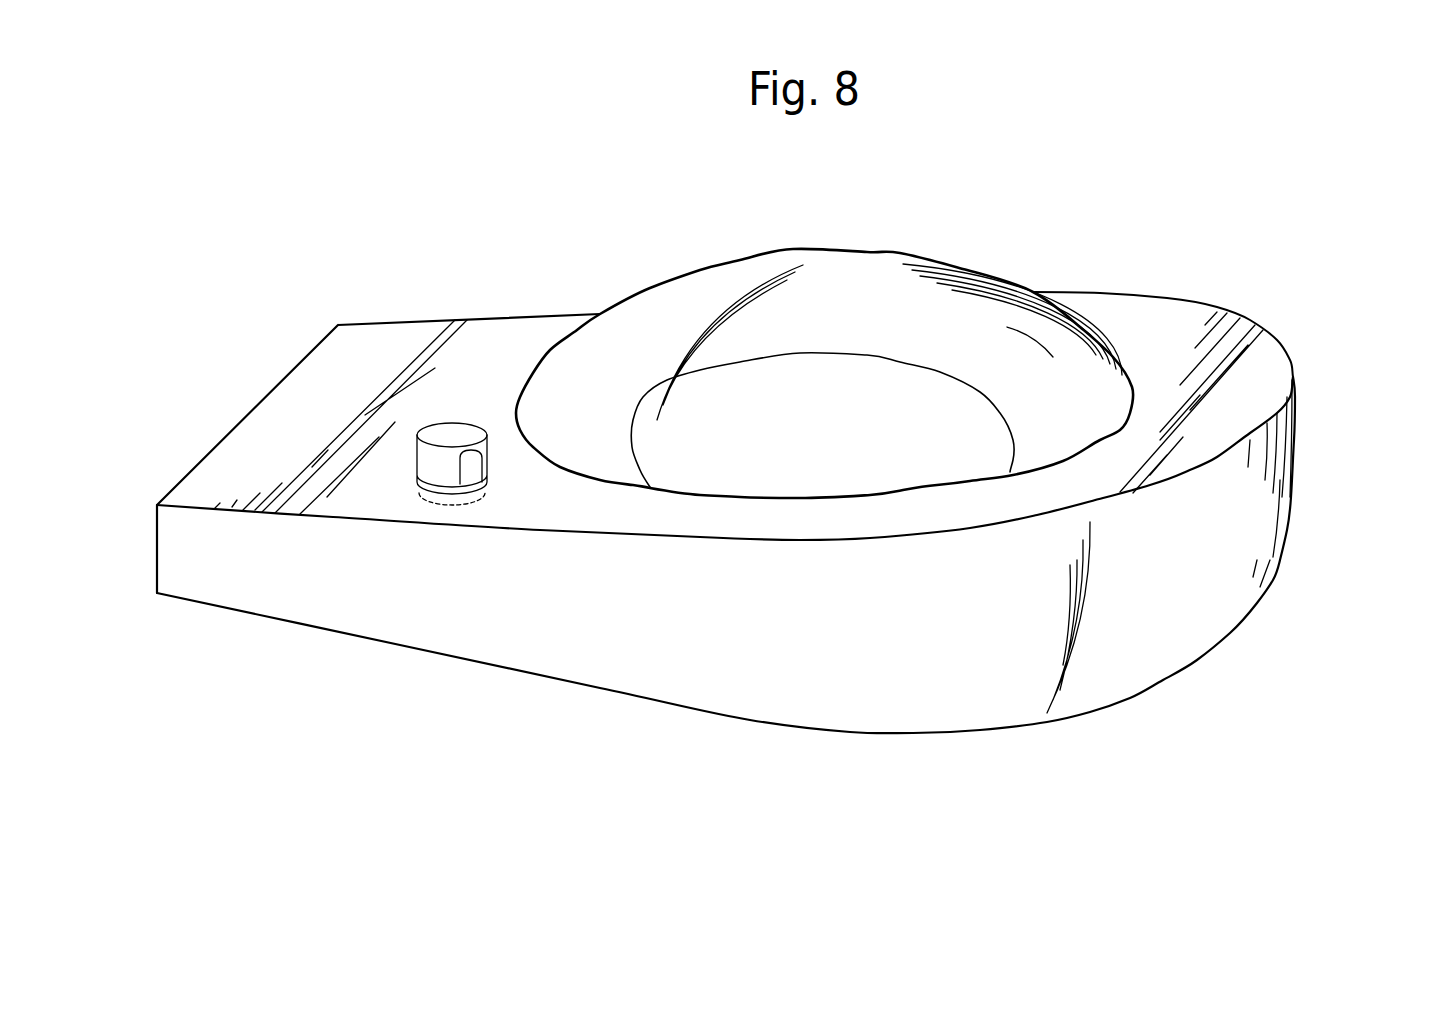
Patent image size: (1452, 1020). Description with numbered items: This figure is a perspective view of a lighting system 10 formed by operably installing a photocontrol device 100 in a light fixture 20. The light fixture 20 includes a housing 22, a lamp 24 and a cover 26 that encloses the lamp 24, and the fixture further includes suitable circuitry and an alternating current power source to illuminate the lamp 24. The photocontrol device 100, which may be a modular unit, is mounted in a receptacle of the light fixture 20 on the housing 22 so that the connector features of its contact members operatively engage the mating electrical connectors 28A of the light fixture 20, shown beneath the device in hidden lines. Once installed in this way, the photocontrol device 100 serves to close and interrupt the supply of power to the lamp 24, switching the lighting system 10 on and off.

The lighting system 10 is at (1048, 170).
The light fixture 20 is at (1300, 520).
The housing 22 is at (807, 688).
The lamp 24 is at (793, 385).
The cover 26 is at (940, 302).
The mating electrical connectors 28A is at (445, 497).
The photocontrol device 100 is at (463, 393).